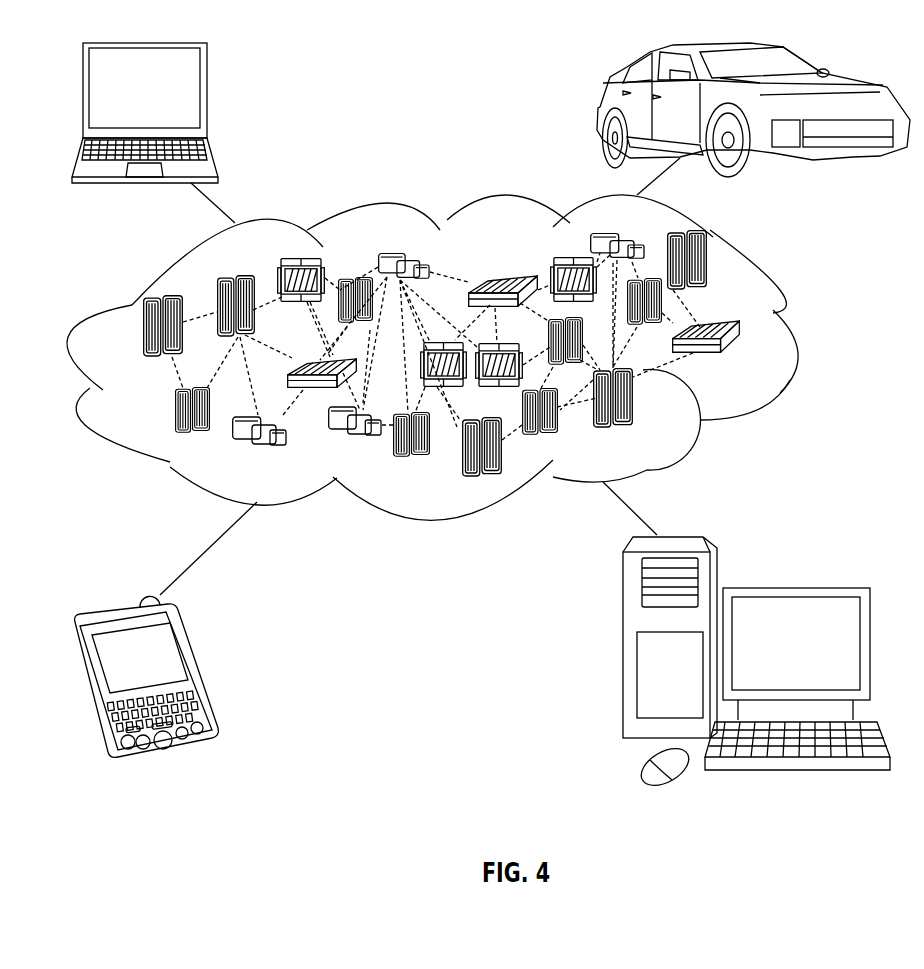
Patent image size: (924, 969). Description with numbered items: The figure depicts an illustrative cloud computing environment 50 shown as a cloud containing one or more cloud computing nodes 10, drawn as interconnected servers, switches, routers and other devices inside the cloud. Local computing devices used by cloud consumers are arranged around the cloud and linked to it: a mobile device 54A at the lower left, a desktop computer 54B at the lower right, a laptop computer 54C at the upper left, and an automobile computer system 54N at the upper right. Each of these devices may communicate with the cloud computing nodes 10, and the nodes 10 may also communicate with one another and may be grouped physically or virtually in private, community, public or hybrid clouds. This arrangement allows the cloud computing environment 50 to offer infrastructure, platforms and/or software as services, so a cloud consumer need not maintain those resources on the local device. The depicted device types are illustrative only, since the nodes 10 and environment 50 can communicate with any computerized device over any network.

The cloud computing node 10 is at (743, 362).
The cloud computing environment 50 is at (796, 336).
The mobile device 54A is at (197, 670).
The desktop computer 54B is at (792, 587).
The laptop computer 54C is at (207, 95).
The automobile computer system 54N is at (600, 110).